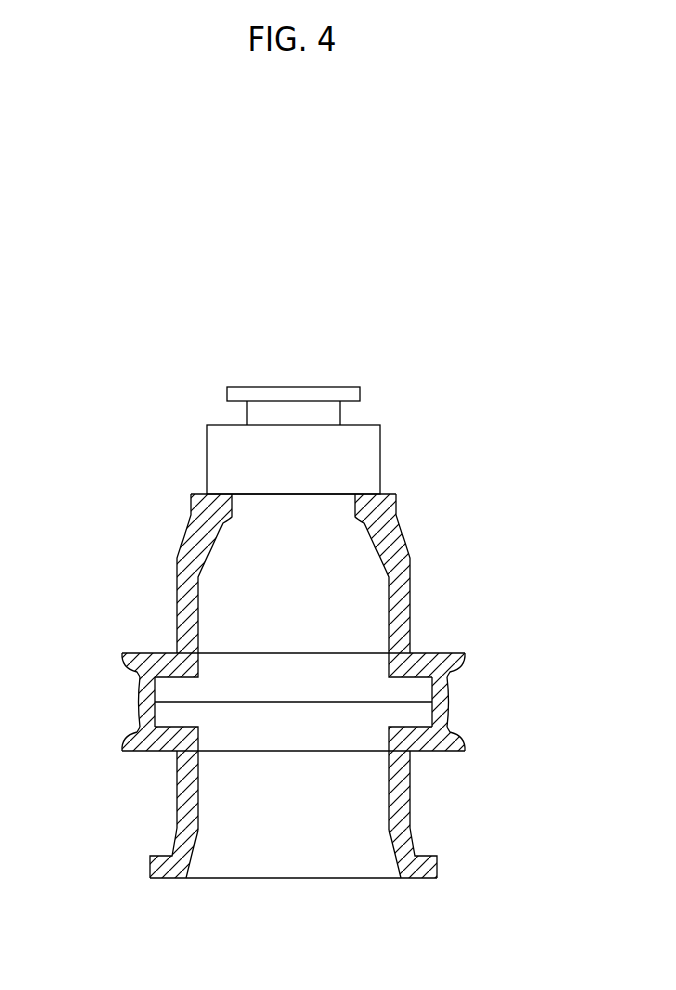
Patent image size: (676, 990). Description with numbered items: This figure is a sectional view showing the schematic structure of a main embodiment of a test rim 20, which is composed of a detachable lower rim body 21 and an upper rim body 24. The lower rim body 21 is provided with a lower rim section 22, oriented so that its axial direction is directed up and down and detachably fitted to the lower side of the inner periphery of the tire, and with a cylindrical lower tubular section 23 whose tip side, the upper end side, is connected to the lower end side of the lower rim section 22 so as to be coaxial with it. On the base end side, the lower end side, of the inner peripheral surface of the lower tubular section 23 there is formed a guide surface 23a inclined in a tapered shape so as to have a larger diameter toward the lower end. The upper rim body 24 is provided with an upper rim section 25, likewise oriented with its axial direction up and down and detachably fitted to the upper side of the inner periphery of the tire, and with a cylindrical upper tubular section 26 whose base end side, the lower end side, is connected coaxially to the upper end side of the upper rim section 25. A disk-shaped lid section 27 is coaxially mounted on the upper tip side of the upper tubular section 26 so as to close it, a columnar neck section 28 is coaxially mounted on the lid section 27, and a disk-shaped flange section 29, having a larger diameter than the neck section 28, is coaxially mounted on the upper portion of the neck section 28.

The test rim 20 is at (430, 360).
The lower rim body 21 is at (110, 857).
The lower rim section 22 is at (462, 741).
The lower tubular section 23 is at (410, 790).
The guide surface 23a is at (388, 863).
The upper rim body 24 is at (148, 547).
The upper rim section 25 is at (462, 663).
The upper tubular section 26 is at (410, 572).
The lid section 27 is at (380, 458).
The neck section 28 is at (340, 410).
The flange section 29 is at (295, 387).